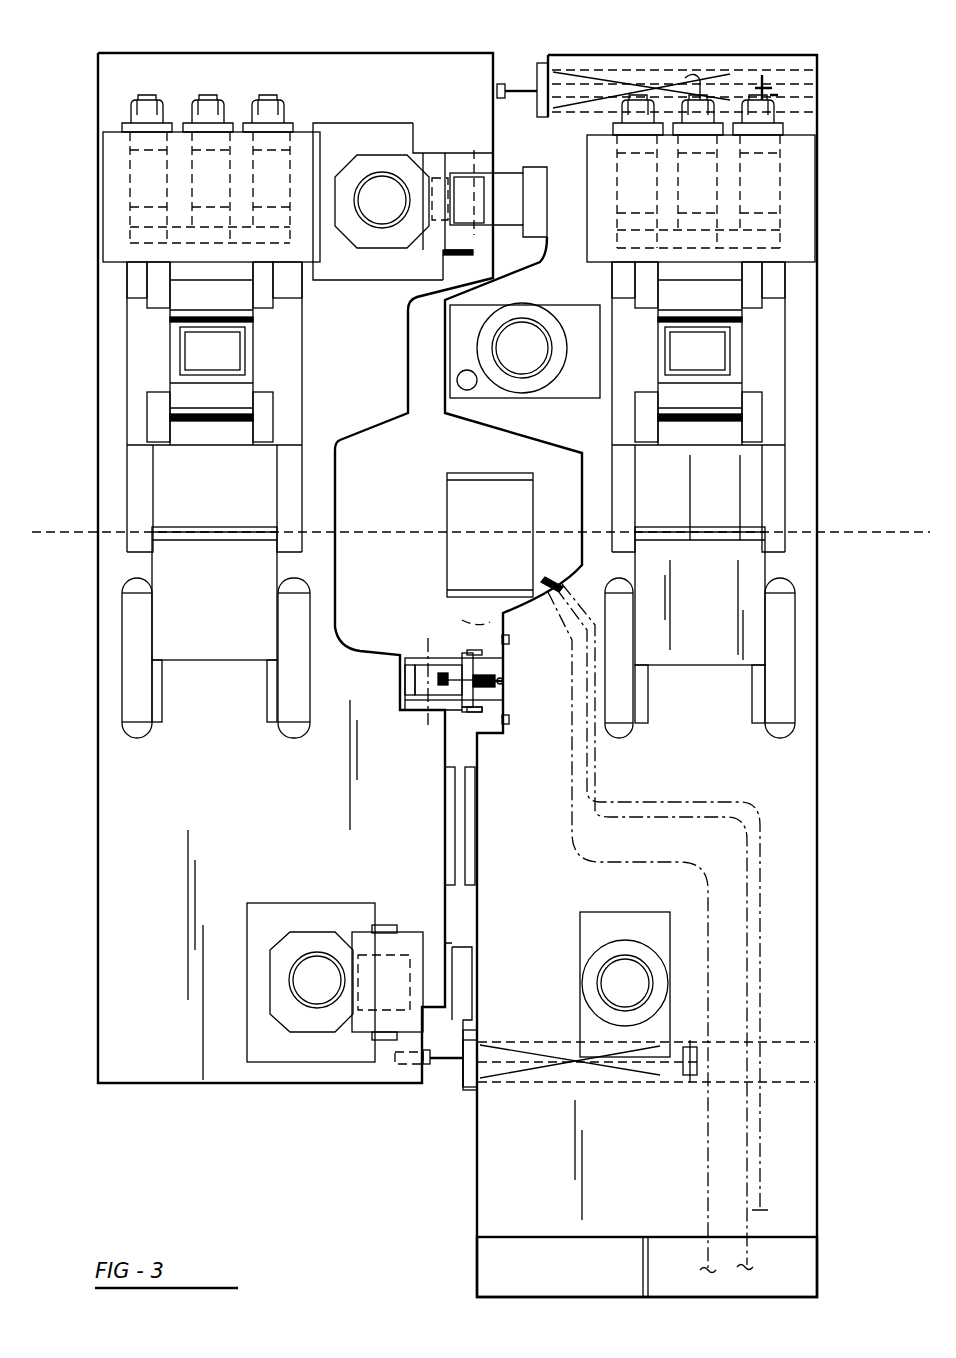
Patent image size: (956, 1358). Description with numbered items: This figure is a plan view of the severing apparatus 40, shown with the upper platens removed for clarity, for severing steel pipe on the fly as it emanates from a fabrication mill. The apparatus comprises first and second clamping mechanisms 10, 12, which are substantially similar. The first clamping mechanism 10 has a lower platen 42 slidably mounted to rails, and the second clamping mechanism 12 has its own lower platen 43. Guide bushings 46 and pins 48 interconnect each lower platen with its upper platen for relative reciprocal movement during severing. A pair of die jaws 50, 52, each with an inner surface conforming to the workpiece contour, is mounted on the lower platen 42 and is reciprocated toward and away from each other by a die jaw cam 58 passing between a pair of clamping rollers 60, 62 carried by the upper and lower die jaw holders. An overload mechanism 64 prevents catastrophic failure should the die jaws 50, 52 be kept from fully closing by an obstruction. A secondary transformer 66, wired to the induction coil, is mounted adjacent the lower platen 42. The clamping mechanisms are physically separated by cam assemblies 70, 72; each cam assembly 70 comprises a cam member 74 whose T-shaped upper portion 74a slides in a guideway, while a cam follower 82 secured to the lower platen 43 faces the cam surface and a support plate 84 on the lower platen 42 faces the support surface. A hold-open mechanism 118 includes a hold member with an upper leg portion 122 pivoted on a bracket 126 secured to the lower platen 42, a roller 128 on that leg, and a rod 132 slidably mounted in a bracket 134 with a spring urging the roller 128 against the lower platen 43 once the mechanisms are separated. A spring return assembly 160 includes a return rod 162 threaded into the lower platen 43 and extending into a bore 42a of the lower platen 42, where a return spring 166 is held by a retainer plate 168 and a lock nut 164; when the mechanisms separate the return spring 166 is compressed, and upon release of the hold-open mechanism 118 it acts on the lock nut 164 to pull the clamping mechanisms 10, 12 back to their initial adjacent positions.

The first clamping mechanism 10 is at (712, 715).
The second clamping mechanism 12 is at (205, 745).
The severing apparatus 40 is at (340, 1105).
The lower platen 42 is at (800, 1008).
The bore 42a is at (790, 88).
The lower platen 43 is at (135, 1028).
The guide bushings 46 is at (370, 165).
The pins 48 is at (384, 190).
The die jaw 50 is at (265, 485).
The die jaw 52 is at (262, 577).
The die jaw cam 58 is at (230, 350).
The clamping roller 60 is at (245, 405).
The clamping roller 62 is at (245, 315).
The overload mechanism 64 is at (145, 165).
The secondary transformer 66 is at (800, 1268).
The cam assembly 70 is at (465, 980).
The cam assembly 72 is at (493, 190).
The cam member 74 is at (515, 225).
The T-shaped upper portion 74a is at (520, 180).
The cam follower 82 is at (430, 255).
The support plate 84 is at (437, 150).
The hold-open mechanism 118 is at (525, 720).
The upper leg portion 122 is at (440, 665).
The bracket 126 is at (508, 650).
The roller 128 is at (418, 685).
The rod 132 is at (500, 690).
The bracket 134 is at (475, 712).
The spring return assembly 160 is at (610, 80).
The return rod 162 is at (505, 84).
The lock nut 164 is at (760, 75).
The return spring 166 is at (690, 78).
The retainer plate 168 is at (468, 1095).